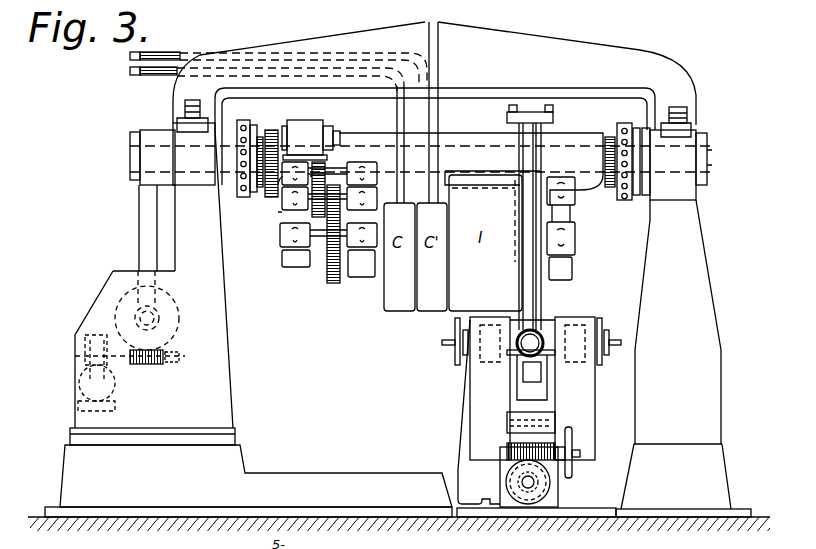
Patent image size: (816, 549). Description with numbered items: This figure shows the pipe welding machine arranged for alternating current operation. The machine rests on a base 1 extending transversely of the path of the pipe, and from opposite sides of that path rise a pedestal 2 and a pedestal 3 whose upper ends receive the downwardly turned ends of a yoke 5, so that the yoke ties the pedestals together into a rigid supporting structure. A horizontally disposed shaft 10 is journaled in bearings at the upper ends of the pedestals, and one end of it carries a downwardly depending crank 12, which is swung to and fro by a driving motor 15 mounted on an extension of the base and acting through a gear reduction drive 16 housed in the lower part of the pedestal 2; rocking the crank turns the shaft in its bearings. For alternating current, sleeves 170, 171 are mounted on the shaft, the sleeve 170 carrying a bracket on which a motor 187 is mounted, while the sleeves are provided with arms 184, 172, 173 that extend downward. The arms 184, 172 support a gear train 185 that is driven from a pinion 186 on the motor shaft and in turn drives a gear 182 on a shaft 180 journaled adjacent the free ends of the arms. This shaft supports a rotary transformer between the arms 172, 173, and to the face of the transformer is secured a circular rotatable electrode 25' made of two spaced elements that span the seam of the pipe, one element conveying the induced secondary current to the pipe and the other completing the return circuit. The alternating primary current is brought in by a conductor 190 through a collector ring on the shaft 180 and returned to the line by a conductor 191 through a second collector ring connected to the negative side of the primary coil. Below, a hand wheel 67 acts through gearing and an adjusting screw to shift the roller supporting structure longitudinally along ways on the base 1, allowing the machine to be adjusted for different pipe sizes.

The base 1 is at (248, 481).
The pedestal 2 is at (233, 352).
The pedestal 3 is at (637, 382).
The yoke 5 is at (390, 25).
The shaft 10 is at (712, 163).
The crank 12 is at (138, 228).
The driving motor 15 is at (110, 388).
The gear reduction drive 16 is at (125, 350).
The hand wheel 67 is at (575, 442).
The sleeve 170 is at (468, 124).
The sleeve 171 is at (585, 133).
The arm 172 is at (362, 279).
The arm 173 is at (575, 280).
The shaft 180 is at (318, 220).
The gear 182 is at (333, 288).
The arm 184 is at (296, 268).
The gear train 185 is at (308, 214).
The pinion 186 is at (270, 128).
The motor 187 is at (312, 135).
The conductor 190 is at (168, 72).
The conductor 191 is at (183, 53).
The circular rotatable electrode 25' is at (511, 230).